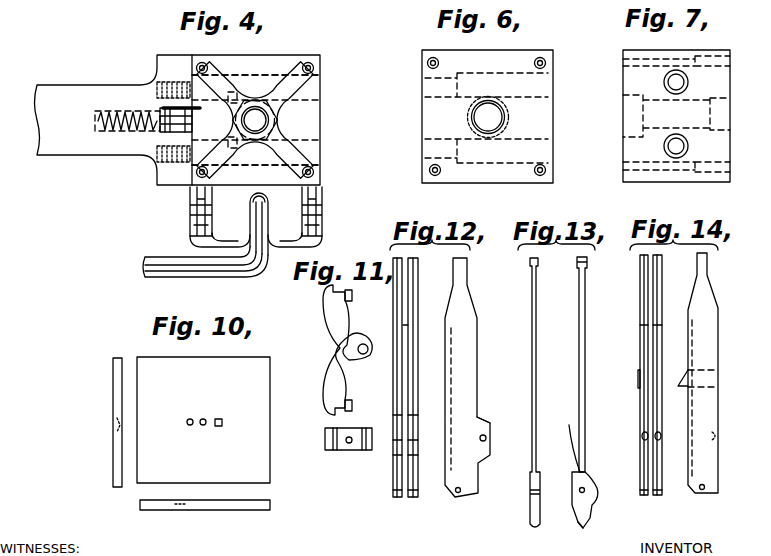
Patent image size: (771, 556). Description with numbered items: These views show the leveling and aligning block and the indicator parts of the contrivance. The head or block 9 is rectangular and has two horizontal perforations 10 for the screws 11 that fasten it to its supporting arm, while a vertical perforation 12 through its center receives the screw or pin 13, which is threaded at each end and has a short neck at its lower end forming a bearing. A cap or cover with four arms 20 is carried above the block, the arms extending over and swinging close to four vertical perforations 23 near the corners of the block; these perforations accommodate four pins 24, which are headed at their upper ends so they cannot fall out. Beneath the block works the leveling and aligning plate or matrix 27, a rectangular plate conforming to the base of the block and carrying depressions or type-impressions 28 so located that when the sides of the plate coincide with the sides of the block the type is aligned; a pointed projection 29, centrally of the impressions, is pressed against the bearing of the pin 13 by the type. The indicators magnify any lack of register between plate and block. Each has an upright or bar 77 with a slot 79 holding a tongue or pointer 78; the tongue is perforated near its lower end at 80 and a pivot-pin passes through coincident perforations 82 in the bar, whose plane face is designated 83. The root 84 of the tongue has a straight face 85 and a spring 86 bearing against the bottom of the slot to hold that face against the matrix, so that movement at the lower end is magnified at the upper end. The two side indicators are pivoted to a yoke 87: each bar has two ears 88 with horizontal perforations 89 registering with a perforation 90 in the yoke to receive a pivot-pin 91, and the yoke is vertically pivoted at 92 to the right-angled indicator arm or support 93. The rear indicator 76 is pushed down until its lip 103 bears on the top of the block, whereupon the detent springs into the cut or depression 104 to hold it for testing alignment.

In FIG. 4, the head or block 9 is at (320, 124).
In FIG. 6, the head or block 9 is at (425, 117).
In FIG. 7, the head or block 9 is at (625, 170).
In FIG. 4, the horizontal perforations 10 is at (320, 91).
In FIG. 6, the horizontal perforations 10 is at (548, 87).
In FIG. 7, the horizontal perforations 10 is at (684, 83).
In FIG. 4, the screws 11 is at (170, 82).
In FIG. 6, the vertical perforation 12 is at (500, 117).
In FIG. 7, the vertical perforation 12 is at (676, 116).
In FIG. 4, the screw or pin 13 is at (255, 120).
In FIG. 4, the arms 20 is at (220, 63).
In FIG. 6, the vertical perforations 23 is at (542, 58).
In FIG. 7, the vertical perforations 23 is at (625, 62).
In FIG. 4, the pins 24 is at (311, 64).
In FIG. 10, the leveling and aligning plate or matrix 27 is at (113, 464).
In FIG. 10, the depressions or type-impressions 28 is at (216, 428).
In FIG. 10, the pointed projection 29 is at (205, 418).
In FIG. 4, the indicator 76 is at (172, 133).
In FIG. 12, the upright or bar 77 is at (393, 376).
In FIG. 13, the tongue or pointer 78 is at (570, 392).
In FIG. 12, the slot 79 is at (418, 402).
In FIG. 13, the perforation 80 is at (584, 492).
In FIG. 12, the perforations 82 is at (457, 494).
In FIG. 12, the straight or plane face 83 is at (422, 344).
In FIG. 13, the root 84 is at (597, 486).
In FIG. 13, the straight face 85 is at (587, 525).
In FIG. 13, the spring 86 is at (576, 462).
In FIG. 11, the yoke 87 is at (340, 348).
In FIG. 12, the ears 88 is at (490, 428).
In FIG. 12, the horizontal perforations 89 is at (484, 441).
In FIG. 11, the perforation 90 is at (350, 301).
In FIG. 4, the pivot-pin 91 is at (190, 230).
In FIG. 4, the vertical pivot 92 is at (264, 200).
In FIG. 4, the indicator arm or support 93 is at (205, 272).
In FIG. 4, the lip 103 is at (193, 118).
In FIG. 14, the lip 103 is at (638, 381).
In FIG. 14, the cut or depression 104 is at (641, 437).